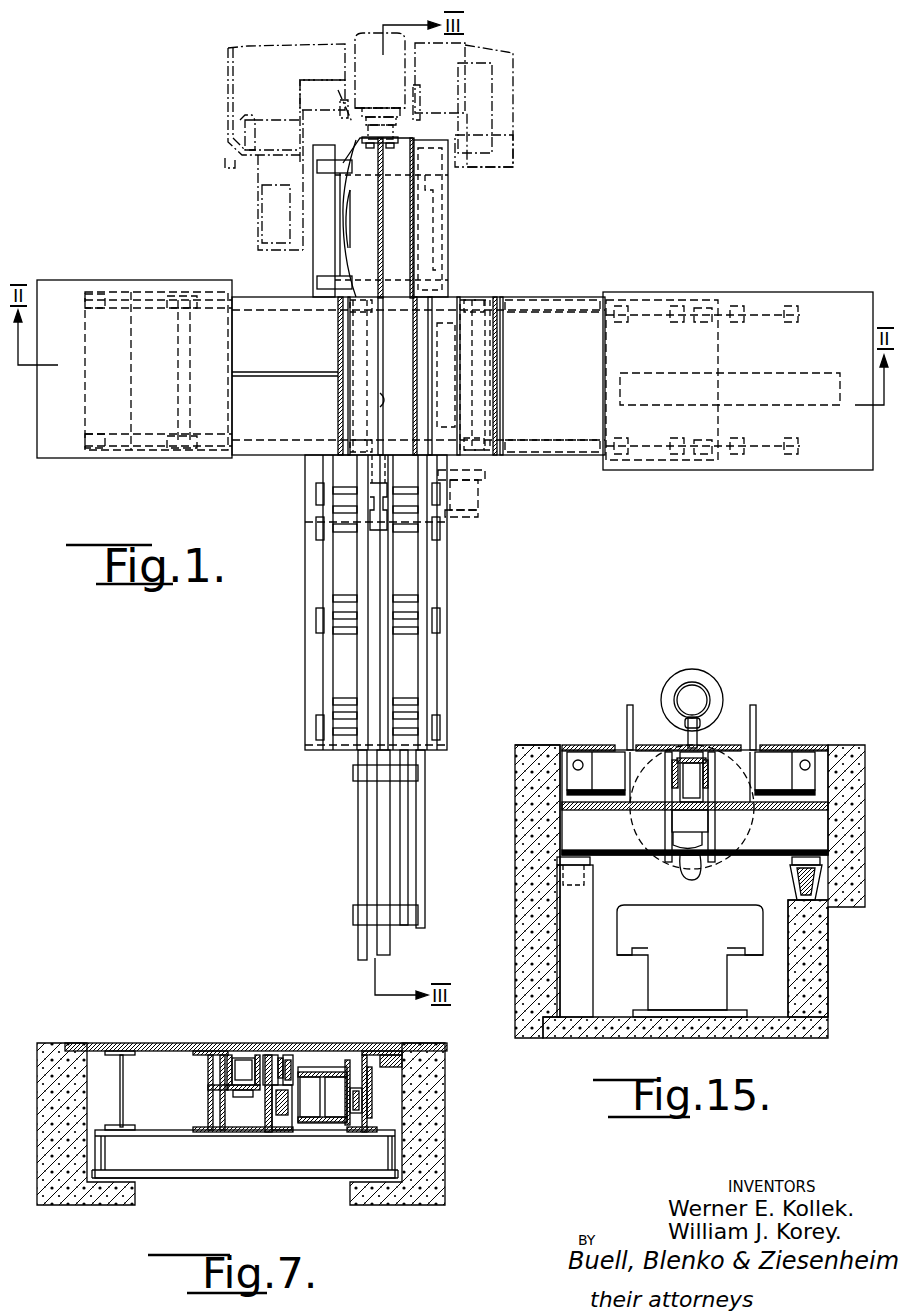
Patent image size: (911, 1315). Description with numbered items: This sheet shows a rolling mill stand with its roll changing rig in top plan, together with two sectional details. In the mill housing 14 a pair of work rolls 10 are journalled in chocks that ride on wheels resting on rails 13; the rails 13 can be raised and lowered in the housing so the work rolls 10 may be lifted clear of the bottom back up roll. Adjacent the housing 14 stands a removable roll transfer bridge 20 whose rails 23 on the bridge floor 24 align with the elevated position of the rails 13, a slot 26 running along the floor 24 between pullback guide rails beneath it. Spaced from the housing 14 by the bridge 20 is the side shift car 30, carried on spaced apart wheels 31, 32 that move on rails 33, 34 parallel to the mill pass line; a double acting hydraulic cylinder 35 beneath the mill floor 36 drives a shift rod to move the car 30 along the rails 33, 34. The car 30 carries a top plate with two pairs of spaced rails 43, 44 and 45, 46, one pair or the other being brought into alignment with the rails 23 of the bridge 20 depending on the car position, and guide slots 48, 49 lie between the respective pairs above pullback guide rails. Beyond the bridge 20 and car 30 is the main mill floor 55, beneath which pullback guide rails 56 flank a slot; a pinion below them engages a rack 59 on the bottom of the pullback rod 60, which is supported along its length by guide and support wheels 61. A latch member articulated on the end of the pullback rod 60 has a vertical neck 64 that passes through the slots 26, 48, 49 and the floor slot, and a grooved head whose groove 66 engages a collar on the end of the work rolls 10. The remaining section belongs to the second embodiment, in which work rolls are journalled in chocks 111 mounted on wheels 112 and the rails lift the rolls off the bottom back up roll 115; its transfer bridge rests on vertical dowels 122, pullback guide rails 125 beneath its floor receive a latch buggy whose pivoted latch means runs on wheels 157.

In FIG. 1, the work rolls 10 is at (380, 82).
In FIG. 1, the rails 13 is at (352, 100).
In FIG. 1, the mill housing 14 is at (470, 148).
In FIG. 1, the roll transfer bridge 20 is at (447, 262).
In FIG. 1, the rails 23 is at (377, 218).
In FIG. 1, the bridge floor 24 is at (432, 220).
In FIG. 1, the slot 26 is at (376, 254).
In FIG. 1, the side shift car 30 is at (488, 297).
In FIG. 1, the wheels 31 is at (485, 460).
In FIG. 1, the wheels 32 is at (350, 462).
In FIG. 1, the rails 33 is at (103, 442).
In FIG. 1, the rails 34 is at (105, 300).
In FIG. 1, the double acting hydraulic cylinder 35 is at (775, 382).
In FIG. 1, the mill floor 36 is at (833, 300).
In FIG. 1, the rails 43 is at (340, 410).
In FIG. 1, the rails 44 is at (412, 352).
In FIG. 1, the rails 45 is at (432, 322).
In FIG. 1, the rails 46 is at (498, 410).
In FIG. 1, the guide slot 48 is at (380, 396).
In FIG. 1, the guide slot 49 is at (462, 366).
In FIG. 7, the main mill floor 55 is at (140, 1043).
In FIG. 7, the pullback guide rails 56 is at (208, 1087).
In FIG. 7, the rack 59 is at (250, 1097).
In FIG. 7, the pullback rod 60 is at (258, 1058).
In FIG. 7, the guide and support wheels 61 is at (227, 1070).
In FIG. 15, the vertical neck 64 is at (692, 748).
In FIG. 15, the groove 66 is at (690, 740).
In FIG. 15, the chocks 111 is at (715, 690).
In FIG. 15, the wheels 112 is at (760, 725).
In FIG. 15, the bottom back up roll 115 is at (642, 828).
In FIG. 15, the vertical dowels 122 is at (795, 880).
In FIG. 15, the pullback guide rails 125 is at (715, 850).
In FIG. 15, the wheels 157 is at (739, 824).